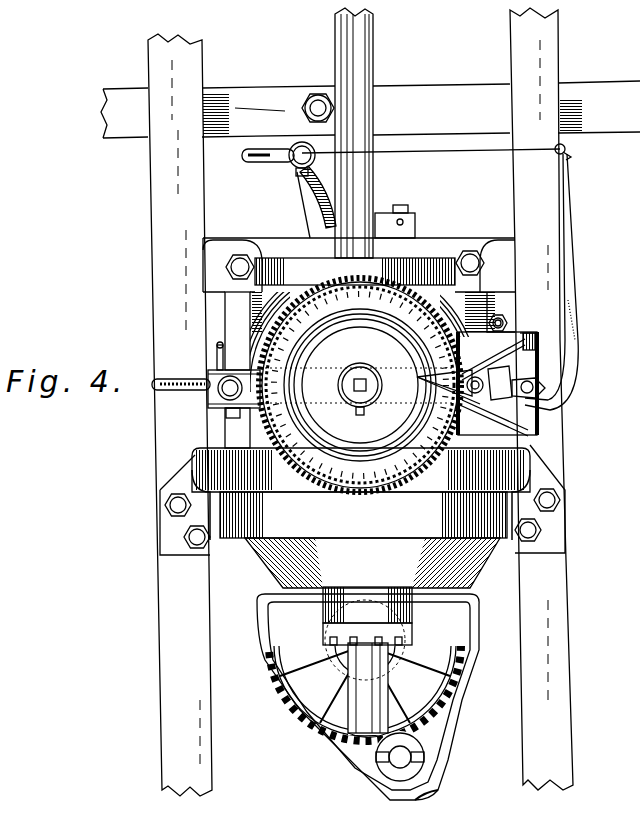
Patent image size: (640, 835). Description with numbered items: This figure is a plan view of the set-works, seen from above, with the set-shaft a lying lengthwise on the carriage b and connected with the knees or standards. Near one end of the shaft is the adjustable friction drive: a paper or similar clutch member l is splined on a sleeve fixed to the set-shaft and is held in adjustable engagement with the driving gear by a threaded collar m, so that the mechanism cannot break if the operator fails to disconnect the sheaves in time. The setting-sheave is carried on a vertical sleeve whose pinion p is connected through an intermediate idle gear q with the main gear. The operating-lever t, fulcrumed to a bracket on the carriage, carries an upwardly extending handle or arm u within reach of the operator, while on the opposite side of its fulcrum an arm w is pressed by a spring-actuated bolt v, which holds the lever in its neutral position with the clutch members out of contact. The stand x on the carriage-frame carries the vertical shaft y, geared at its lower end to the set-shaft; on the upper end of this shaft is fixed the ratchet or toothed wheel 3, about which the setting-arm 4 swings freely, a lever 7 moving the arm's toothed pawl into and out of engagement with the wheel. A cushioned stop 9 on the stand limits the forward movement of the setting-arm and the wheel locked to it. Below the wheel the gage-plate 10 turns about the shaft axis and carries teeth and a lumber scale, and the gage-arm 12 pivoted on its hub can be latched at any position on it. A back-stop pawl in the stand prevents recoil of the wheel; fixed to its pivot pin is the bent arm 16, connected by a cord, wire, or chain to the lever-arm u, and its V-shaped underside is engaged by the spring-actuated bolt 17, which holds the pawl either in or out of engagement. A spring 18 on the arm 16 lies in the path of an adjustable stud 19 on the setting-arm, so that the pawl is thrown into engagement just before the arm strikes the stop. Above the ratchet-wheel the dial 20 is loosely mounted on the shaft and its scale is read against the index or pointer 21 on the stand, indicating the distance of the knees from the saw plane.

The set-shaft a is at (335, 47).
The carriage b is at (360, 402).
The handle or arm u is at (262, 170).
The operating-lever t is at (322, 192).
The arm of the lever w is at (498, 315).
The spring-actuated bolt v is at (505, 323).
The stand x is at (537, 340).
The angular or bent arm 16 is at (578, 330).
The spring 18 is at (530, 350).
The spring-actuated bolt 17 is at (532, 400).
The stop 9 is at (497, 384).
The index or pointer 21 is at (440, 388).
The setting-arm 4 is at (397, 296).
The vertical shaft y is at (354, 378).
The dial 20 is at (360, 385).
The ratchet or toothed wheel 3 is at (237, 370).
The adjustable stud 19 is at (215, 350).
The gage-arm 12 is at (175, 382).
The lever 7 is at (208, 396).
The gage-plate 10 is at (290, 462).
The clutch member l is at (363, 515).
The collar m is at (322, 637).
The intermediate idle gear q is at (272, 648).
The pinion p is at (432, 740).